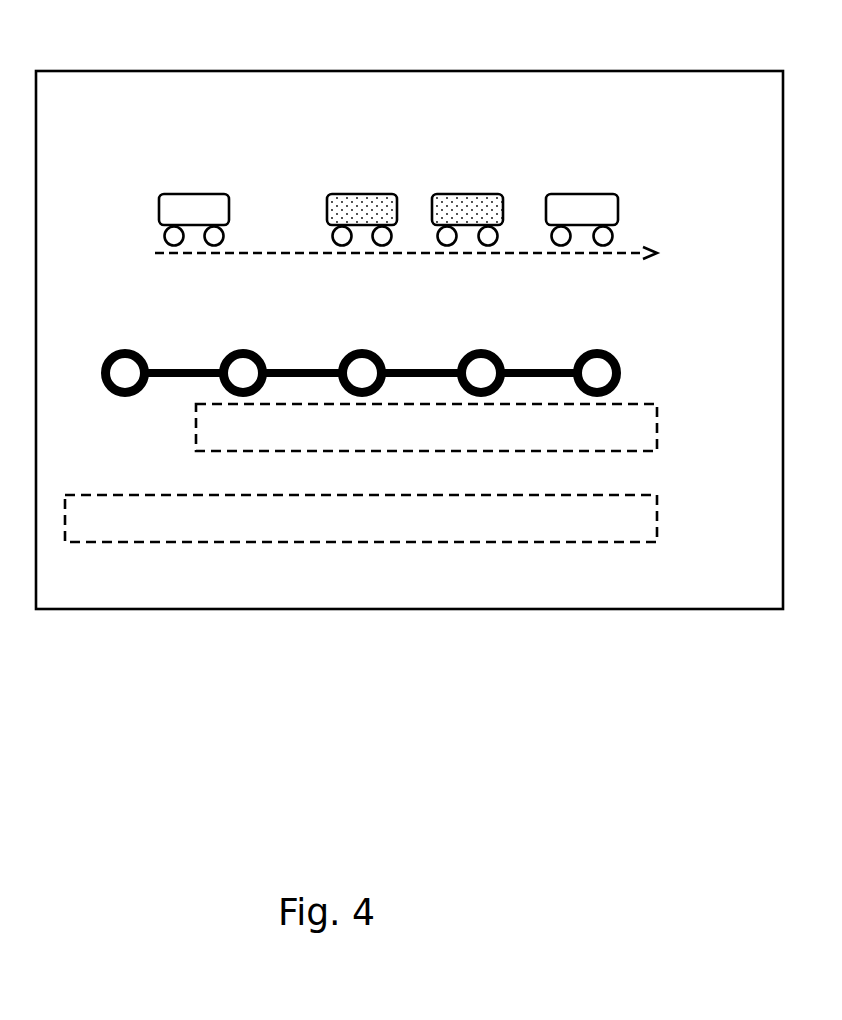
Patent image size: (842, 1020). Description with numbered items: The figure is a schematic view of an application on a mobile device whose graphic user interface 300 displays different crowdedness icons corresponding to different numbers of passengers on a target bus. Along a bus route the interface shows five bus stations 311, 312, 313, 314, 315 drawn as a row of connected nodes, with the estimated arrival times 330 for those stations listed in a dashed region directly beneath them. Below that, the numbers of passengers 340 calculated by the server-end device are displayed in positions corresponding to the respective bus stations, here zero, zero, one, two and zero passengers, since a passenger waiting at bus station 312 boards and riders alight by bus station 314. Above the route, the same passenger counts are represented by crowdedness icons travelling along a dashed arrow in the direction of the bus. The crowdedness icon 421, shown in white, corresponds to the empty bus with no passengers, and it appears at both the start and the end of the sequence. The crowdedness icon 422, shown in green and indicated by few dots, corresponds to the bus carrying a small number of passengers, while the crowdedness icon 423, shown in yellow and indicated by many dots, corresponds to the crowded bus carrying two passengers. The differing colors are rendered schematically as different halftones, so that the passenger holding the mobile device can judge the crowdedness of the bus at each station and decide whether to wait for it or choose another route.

The graphic user interface 300 is at (407, 71).
The bus station 311 is at (122, 396).
The bus station 312 is at (248, 350).
The bus station 313 is at (367, 350).
The bus station 314 is at (485, 350).
The bus station 315 is at (603, 350).
The estimated arrival times 330 is at (660, 424).
The numbers of passengers 340 is at (660, 518).
The crowdedness icon 421 is at (205, 194).
The crowdedness icon 422 is at (375, 194).
The crowdedness icon 423 is at (478, 194).